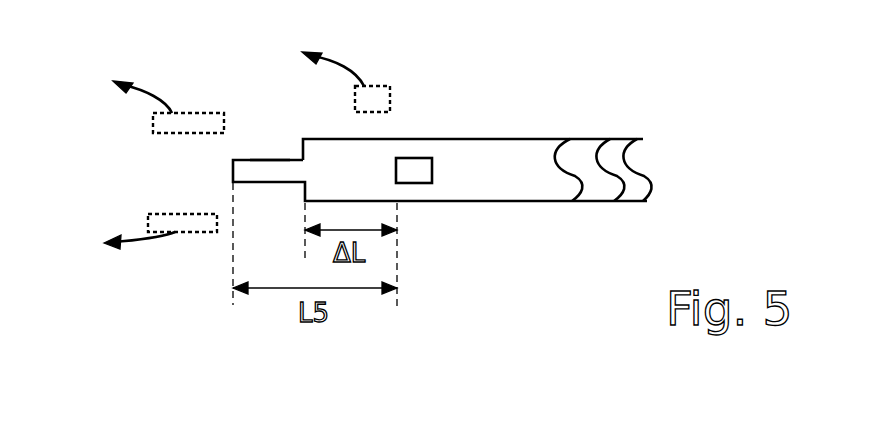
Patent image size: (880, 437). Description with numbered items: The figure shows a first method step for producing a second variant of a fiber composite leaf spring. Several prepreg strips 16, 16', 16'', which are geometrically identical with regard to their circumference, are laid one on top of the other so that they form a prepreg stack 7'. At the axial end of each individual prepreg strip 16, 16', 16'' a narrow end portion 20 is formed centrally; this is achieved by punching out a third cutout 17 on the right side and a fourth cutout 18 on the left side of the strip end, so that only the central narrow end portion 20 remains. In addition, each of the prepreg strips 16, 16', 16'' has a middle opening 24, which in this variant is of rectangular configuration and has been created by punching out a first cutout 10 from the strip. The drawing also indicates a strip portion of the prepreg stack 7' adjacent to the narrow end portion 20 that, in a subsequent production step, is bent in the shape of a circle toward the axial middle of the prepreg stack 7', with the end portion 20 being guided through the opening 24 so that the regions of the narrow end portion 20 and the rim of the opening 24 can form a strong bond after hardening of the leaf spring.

The prepreg stack 7' is at (440, 195).
The first cutout 10 is at (377, 86).
The prepreg strip 16 is at (545, 139).
The prepreg strip 16' is at (605, 139).
The prepreg strip 16'' is at (658, 139).
The third cutout 17 is at (209, 112).
The fourth cutout 18 is at (188, 232).
The narrow end portion 20 is at (270, 165).
The middle opening 24 is at (413, 158).